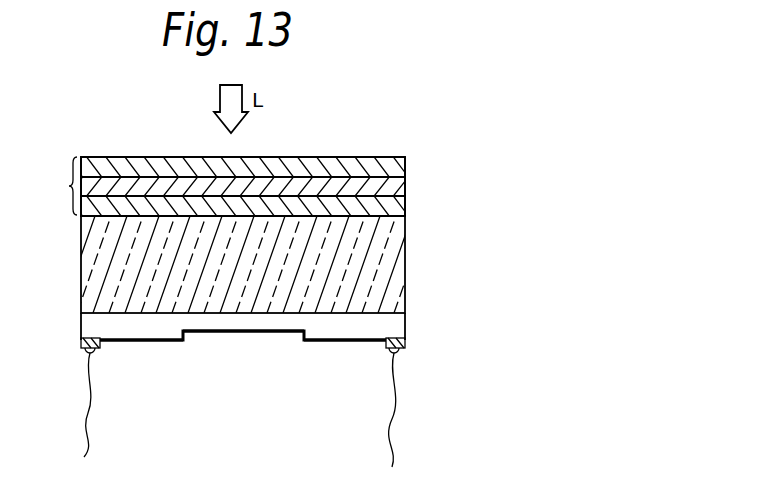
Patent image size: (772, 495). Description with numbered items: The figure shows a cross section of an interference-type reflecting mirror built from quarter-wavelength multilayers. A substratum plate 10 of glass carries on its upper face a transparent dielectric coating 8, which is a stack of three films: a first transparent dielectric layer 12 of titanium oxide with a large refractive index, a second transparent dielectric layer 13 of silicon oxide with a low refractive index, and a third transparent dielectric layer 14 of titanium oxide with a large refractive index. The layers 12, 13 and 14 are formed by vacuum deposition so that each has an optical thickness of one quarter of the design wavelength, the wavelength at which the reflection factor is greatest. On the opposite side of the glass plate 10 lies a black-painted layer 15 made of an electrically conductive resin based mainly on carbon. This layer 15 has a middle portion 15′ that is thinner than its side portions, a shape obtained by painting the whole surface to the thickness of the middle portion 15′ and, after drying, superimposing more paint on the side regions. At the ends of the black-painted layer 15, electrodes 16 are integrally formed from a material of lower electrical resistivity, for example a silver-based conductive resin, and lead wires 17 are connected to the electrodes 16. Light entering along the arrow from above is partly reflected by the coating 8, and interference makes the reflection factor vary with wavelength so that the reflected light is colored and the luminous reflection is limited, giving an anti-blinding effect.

The transparent dielectric coating 8 is at (62, 180).
The substratum plate 10 is at (406, 278).
The first transparent dielectric layer 12 is at (406, 213).
The second transparent dielectric layer 13 is at (406, 189).
The third transparent dielectric layer 14 is at (406, 162).
The black-painted layer 15 is at (406, 319).
The middle portion 15′ is at (250, 325).
The electrodes 16 is at (406, 345).
The lead wires 17 is at (394, 420).